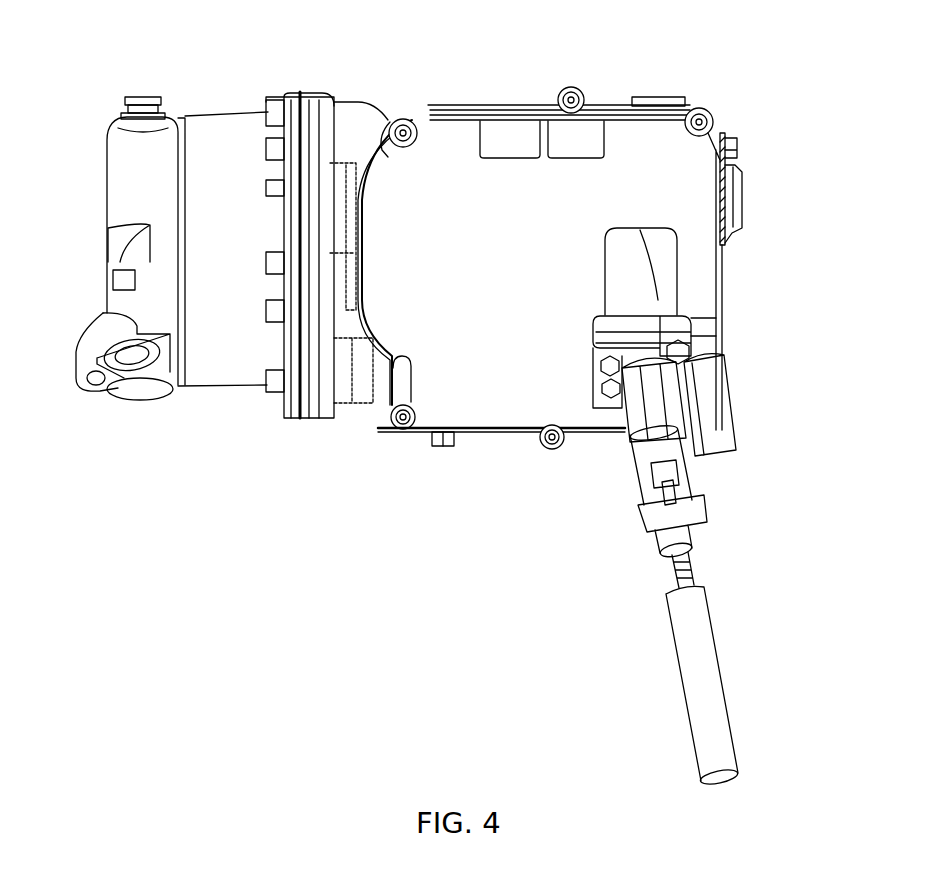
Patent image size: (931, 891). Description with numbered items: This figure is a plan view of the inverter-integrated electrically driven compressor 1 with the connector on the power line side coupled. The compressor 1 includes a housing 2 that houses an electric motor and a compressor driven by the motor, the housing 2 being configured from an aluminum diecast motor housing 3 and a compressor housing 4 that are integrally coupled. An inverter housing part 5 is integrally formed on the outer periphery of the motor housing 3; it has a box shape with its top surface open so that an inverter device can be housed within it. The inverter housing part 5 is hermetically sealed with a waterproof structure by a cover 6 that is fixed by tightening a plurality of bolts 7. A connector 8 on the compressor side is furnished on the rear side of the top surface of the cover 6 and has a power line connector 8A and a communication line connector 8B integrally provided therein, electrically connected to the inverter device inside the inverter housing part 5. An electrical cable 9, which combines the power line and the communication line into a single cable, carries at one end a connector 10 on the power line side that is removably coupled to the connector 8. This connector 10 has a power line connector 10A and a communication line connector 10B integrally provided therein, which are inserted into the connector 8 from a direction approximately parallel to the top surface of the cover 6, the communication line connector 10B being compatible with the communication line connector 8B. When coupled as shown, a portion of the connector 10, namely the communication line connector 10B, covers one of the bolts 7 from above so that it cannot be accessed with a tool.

The inverter-integrated electrically driven compressor 1 is at (452, 72).
The housing 2 is at (361, 418).
The motor housing 3 is at (229, 365).
The compressor housing 4 is at (354, 128).
The inverter housing part 5 is at (500, 434).
The cover 6 is at (512, 180).
The bolts 7 is at (572, 88).
The connector on the compressor side 8 is at (576, 338).
The power line connector 8A is at (634, 362).
The communication line connector 8B is at (702, 355).
The electrical cable 9 is at (690, 652).
The connector on the power line side 10 is at (624, 468).
The power line connector 10A is at (642, 403).
The communication line connector 10B is at (712, 408).